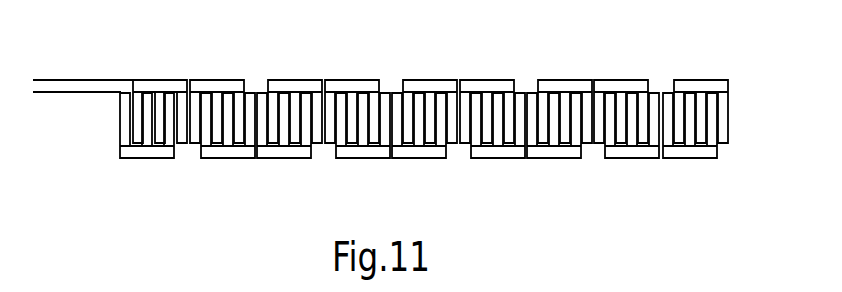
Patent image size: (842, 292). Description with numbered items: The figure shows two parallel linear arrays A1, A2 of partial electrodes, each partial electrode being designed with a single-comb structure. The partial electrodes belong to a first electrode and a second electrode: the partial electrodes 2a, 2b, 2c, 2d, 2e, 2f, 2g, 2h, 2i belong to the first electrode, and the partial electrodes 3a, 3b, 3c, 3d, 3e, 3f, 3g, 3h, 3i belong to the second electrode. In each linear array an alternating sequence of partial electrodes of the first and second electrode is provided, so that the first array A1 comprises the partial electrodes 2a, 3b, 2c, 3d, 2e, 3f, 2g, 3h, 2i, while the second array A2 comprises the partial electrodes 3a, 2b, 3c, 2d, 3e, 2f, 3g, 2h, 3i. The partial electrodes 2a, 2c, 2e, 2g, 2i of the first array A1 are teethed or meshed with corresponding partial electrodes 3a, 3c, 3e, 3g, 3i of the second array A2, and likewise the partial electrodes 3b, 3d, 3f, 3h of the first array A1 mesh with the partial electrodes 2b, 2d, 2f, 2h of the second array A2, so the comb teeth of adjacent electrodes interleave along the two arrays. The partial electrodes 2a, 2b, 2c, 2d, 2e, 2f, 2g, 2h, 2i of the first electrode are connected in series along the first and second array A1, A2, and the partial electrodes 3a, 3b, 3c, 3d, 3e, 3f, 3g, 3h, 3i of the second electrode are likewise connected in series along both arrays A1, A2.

The partial electrode 2a is at (162, 80).
The partial electrode 2b is at (223, 158).
The partial electrode 2c is at (295, 80).
The partial electrode 2d is at (365, 158).
The partial electrode 2e is at (430, 80).
The partial electrode 2f is at (497, 158).
The partial electrode 2g is at (565, 80).
The partial electrode 2h is at (635, 158).
The partial electrode 2i is at (698, 80).
The partial electrode 3a is at (147, 158).
The partial electrode 3b is at (220, 80).
The partial electrode 3c is at (285, 158).
The partial electrode 3d is at (357, 80).
The partial electrode 3e is at (420, 158).
The partial electrode 3f is at (488, 80).
The partial electrode 3g is at (553, 158).
The partial electrode 3h is at (625, 80).
The partial electrode 3i is at (708, 158).
The first array A1 is at (733, 85).
The second array A2 is at (733, 85).